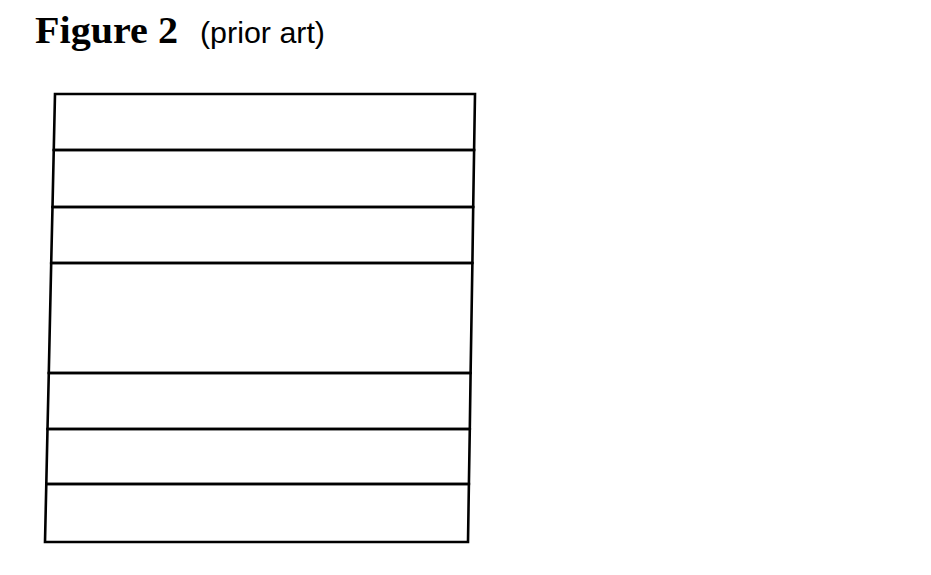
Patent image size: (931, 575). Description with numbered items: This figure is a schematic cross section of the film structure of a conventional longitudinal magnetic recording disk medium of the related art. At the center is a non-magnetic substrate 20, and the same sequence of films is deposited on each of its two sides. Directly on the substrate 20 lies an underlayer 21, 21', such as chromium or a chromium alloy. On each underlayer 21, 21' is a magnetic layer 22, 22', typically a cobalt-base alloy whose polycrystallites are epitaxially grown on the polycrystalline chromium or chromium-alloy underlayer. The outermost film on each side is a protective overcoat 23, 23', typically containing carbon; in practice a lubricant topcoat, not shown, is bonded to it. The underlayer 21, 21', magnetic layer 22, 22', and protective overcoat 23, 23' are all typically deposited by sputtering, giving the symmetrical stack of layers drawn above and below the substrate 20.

The protective overcoat 23 is at (419, 122).
The magnetic layer 22 is at (399, 178).
The underlayer 21 is at (379, 235).
The non-magnetic substrate 20 is at (556, 338).
The underlayer 21' is at (381, 401).
The magnetic layer 22' is at (395, 456).
The protective overcoat 23' is at (415, 513).